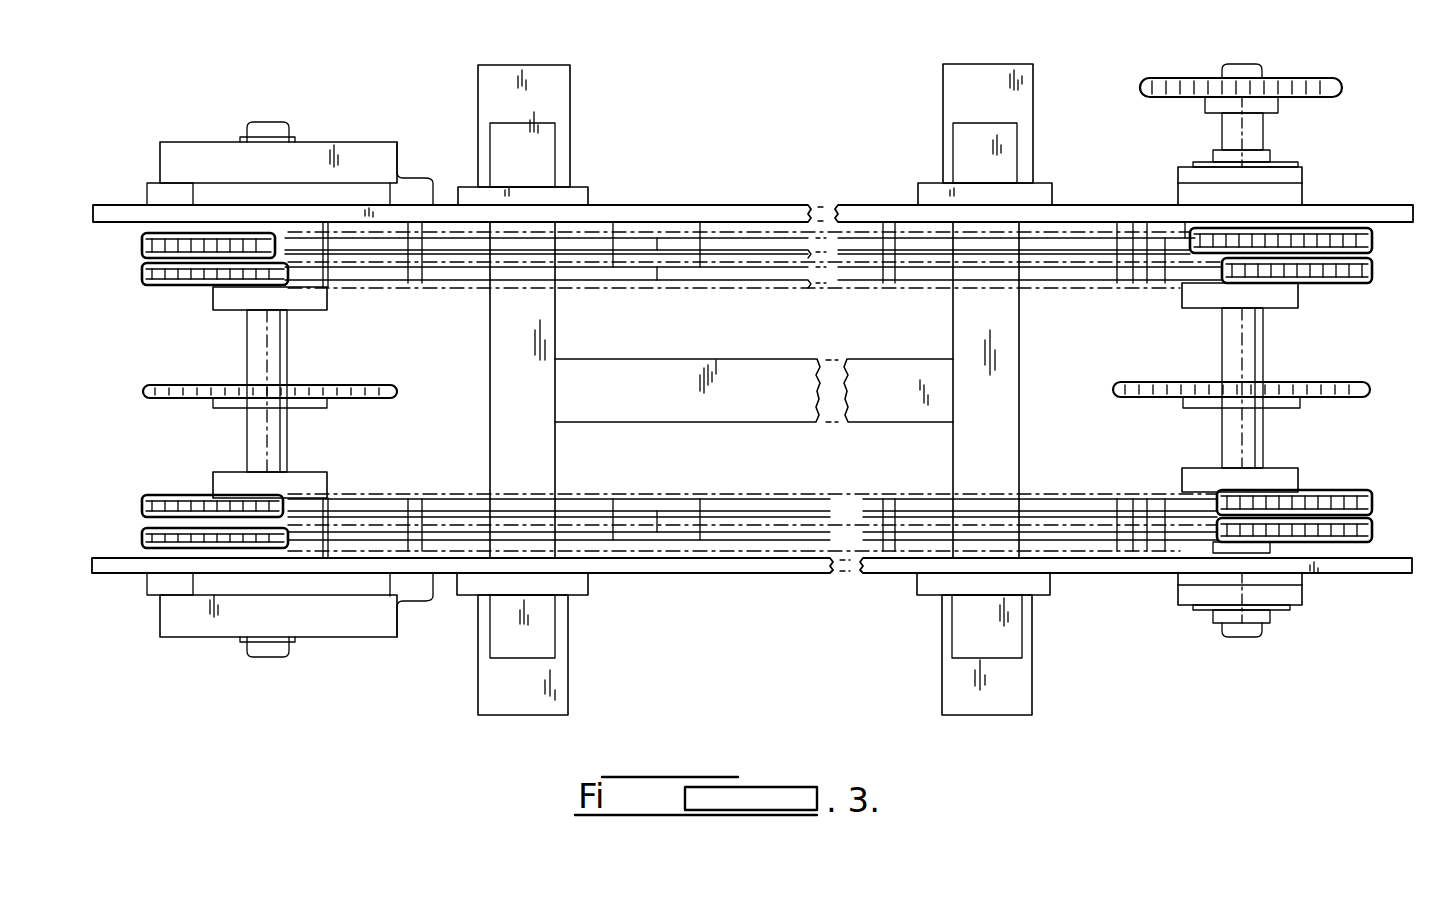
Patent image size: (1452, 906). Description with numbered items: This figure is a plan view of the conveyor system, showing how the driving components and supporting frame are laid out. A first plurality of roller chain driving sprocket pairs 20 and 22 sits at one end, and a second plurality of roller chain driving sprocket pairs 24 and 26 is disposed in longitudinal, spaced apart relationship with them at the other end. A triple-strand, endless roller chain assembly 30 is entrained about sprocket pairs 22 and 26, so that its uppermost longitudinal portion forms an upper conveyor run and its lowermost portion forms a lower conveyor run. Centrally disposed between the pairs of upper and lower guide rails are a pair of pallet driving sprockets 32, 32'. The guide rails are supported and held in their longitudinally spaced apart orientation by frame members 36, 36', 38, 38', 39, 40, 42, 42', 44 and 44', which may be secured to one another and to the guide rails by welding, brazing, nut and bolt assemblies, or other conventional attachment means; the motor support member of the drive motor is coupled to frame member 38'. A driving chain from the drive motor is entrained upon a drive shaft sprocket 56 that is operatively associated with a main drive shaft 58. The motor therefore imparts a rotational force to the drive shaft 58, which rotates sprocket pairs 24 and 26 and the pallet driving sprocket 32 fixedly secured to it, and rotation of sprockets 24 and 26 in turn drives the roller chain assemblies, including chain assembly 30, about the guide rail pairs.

The roller chain driving sprocket pair 20 is at (172, 486).
The roller chain driving sprocket pair 22 is at (159, 302).
The roller chain driving sprocket pair 24 is at (1394, 513).
The roller chain driving sprocket pair 26 is at (1402, 236).
The roller chain assembly 30 is at (1005, 326).
The pallet driving sprocket 32 is at (1336, 370).
The pallet driving sprocket 32' is at (284, 392).
The frame member 36 is at (540, 632).
The frame member 36' is at (557, 135).
The frame member 38 is at (1005, 628).
The frame member 38' is at (957, 134).
The frame member 39 is at (540, 330).
The frame member 40 is at (740, 375).
The frame member 42 is at (160, 585).
The frame member 42' is at (247, 156).
The frame member 44 is at (412, 585).
The frame member 44' is at (419, 153).
The drive shaft sprocket 56 is at (1128, 86).
The main drive shaft 58 is at (1299, 138).